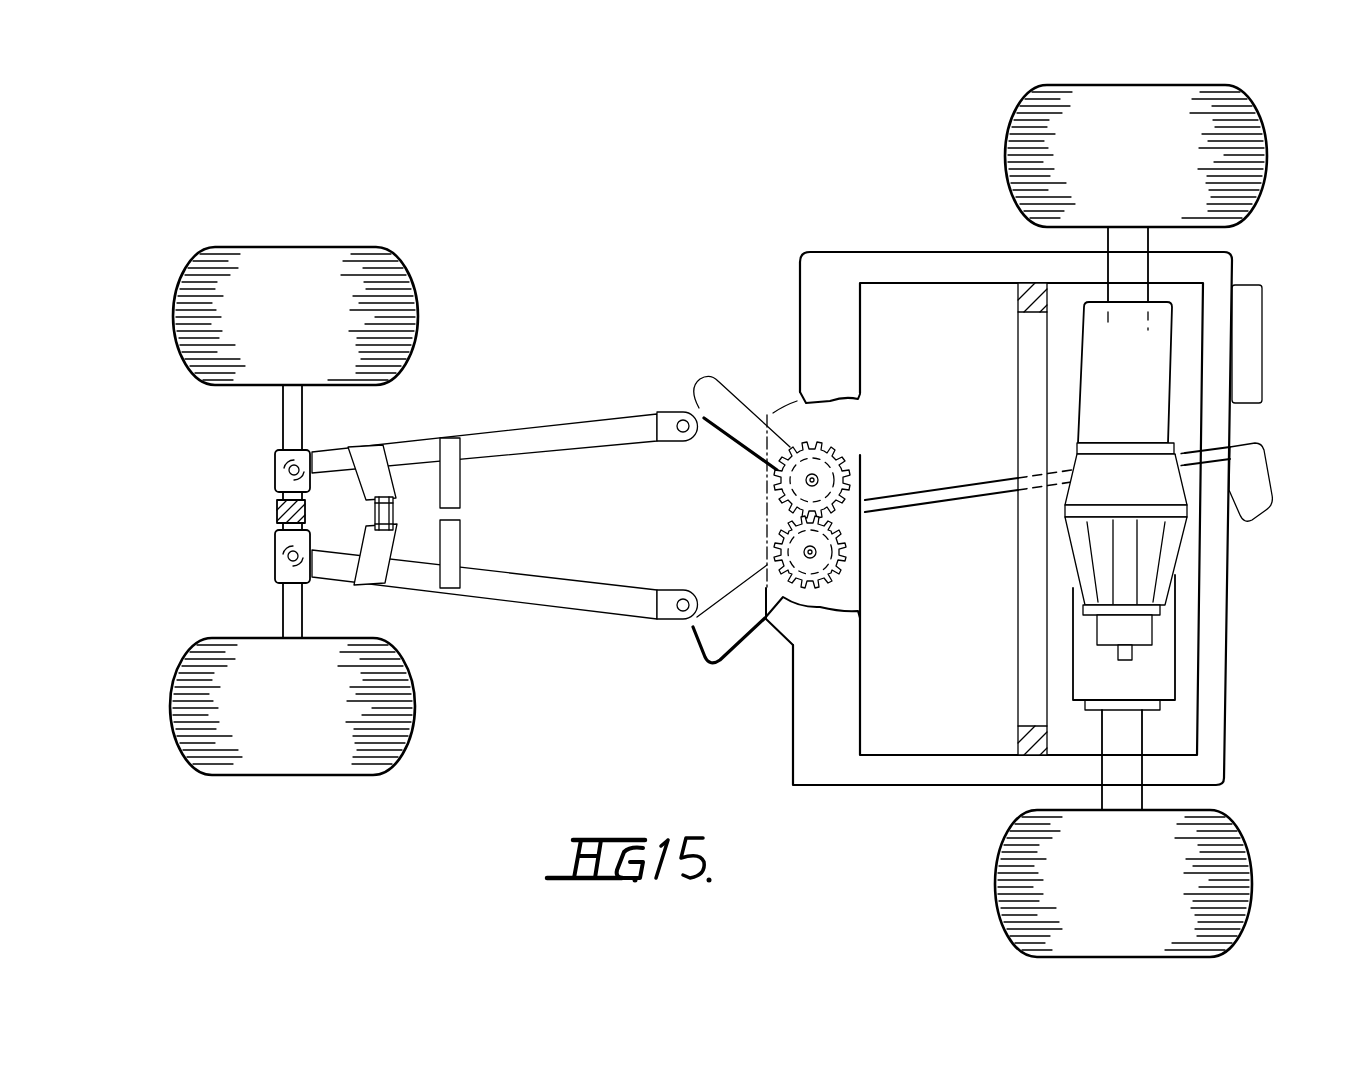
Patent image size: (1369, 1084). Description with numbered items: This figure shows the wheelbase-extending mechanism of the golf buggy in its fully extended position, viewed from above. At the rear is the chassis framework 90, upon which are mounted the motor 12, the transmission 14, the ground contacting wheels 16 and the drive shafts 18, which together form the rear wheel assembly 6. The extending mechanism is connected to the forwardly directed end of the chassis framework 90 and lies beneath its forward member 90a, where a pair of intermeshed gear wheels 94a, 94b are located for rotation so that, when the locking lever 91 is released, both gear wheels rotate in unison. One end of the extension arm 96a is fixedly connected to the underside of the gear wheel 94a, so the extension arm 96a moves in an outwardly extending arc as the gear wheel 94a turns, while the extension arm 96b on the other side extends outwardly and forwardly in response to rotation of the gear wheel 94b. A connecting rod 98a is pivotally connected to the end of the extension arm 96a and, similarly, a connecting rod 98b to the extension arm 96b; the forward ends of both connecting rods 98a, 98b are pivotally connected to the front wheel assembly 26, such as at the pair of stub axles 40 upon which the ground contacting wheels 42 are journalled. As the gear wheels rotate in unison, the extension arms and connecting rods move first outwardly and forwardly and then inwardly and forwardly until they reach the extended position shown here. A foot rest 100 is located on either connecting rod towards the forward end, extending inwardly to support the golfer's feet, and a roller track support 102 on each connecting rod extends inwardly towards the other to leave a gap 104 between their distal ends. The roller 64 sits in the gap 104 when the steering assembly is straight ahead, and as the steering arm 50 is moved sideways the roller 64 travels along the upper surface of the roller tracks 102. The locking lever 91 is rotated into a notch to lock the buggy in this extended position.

The rear wheel assembly 6 is at (719, 521).
The motor 12 is at (1148, 374).
The transmission 14 is at (1143, 678).
The ground contacting wheels 16 is at (1055, 150).
The drive shafts 18 is at (1128, 240).
The front wheel assembly 26 is at (401, 511).
The stub axles 40 is at (297, 410).
The ground contacting wheels 42 is at (405, 325).
The steering arm 50 is at (276, 512).
The roller 64 is at (376, 512).
The chassis framework 90 is at (1018, 476).
The forward member of the chassis frame 90a is at (843, 337).
The locking lever 91 is at (945, 500).
The gear wheel 94a is at (827, 462).
The gear wheel 94b is at (850, 558).
The extension arm 96a is at (735, 405).
The extension arm 96b is at (740, 617).
The connecting rod 98a is at (545, 438).
The connecting rod 98b is at (527, 682).
The foot rest 100 is at (460, 487).
The roller track support 102 is at (370, 479).
The gap 104 is at (408, 518).